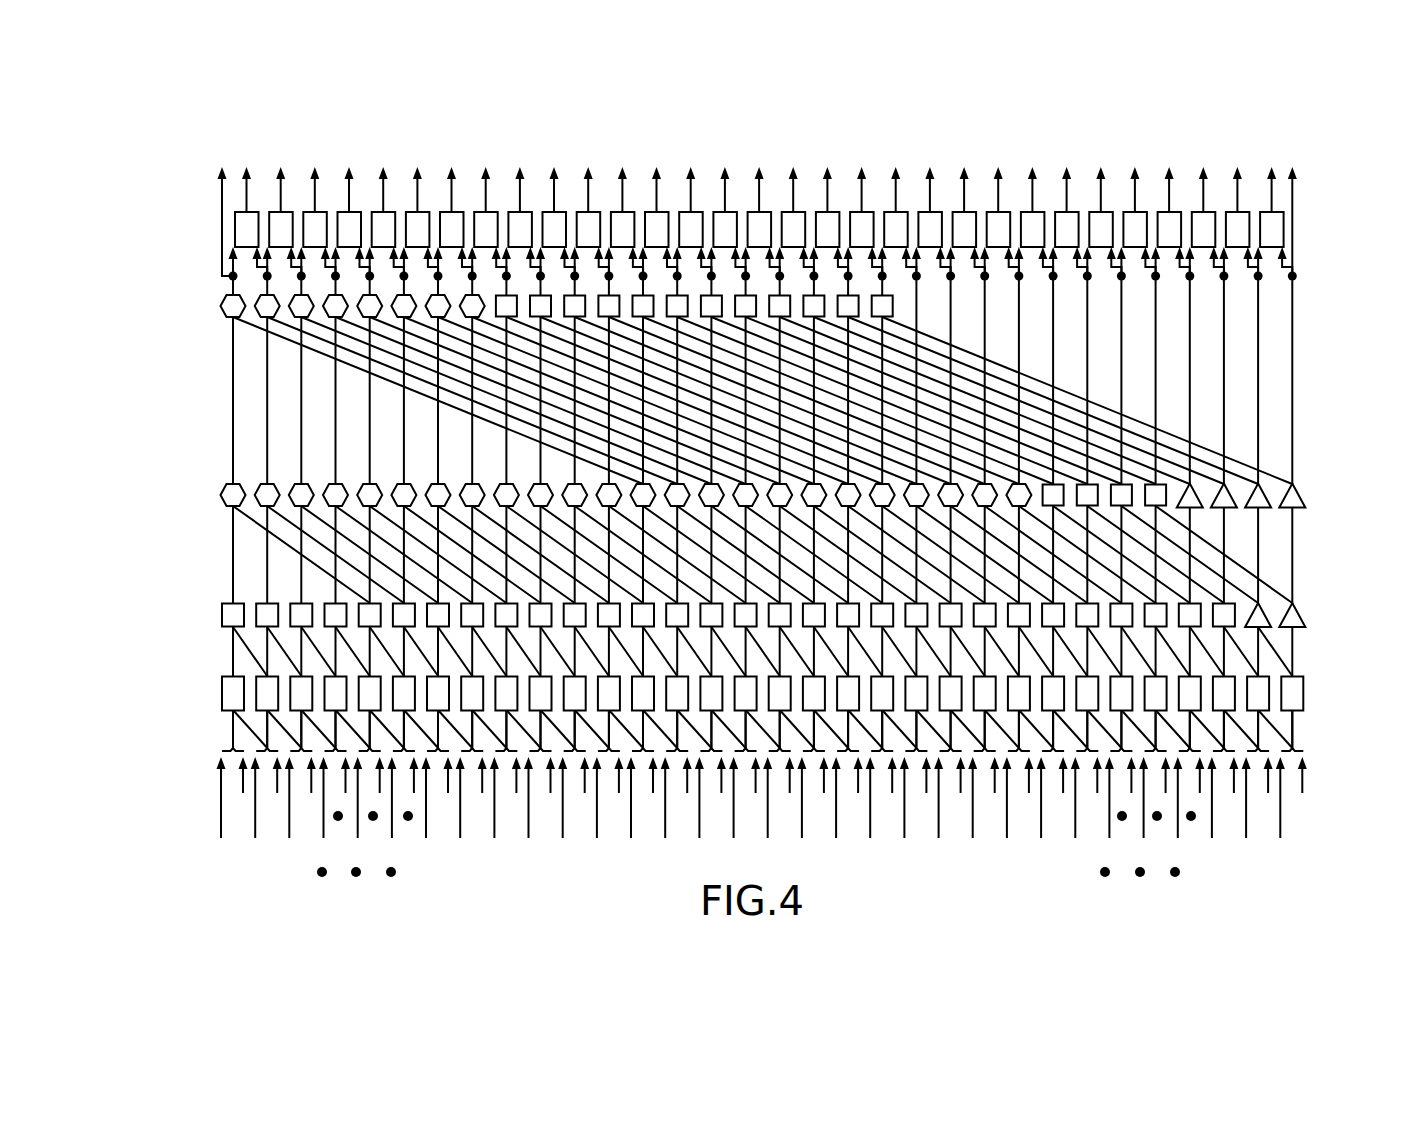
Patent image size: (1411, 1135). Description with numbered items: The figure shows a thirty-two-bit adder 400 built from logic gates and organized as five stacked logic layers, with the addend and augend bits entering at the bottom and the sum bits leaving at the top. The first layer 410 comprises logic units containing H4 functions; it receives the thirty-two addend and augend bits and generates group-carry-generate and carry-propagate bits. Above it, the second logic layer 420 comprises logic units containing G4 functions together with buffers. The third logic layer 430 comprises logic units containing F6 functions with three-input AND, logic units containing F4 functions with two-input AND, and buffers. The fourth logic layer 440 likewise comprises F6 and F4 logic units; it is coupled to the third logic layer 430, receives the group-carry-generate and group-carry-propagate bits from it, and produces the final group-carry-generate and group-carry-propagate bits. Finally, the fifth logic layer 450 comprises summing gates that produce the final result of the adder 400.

The 32-bit adder 400 is at (1247, 118).
The first layer 410 is at (176, 660).
The second logic layer 420 is at (176, 585).
The third logic layer 430 is at (176, 470).
The fourth logic layer 440 is at (176, 283).
The fifth logic layer 450 is at (211, 200).